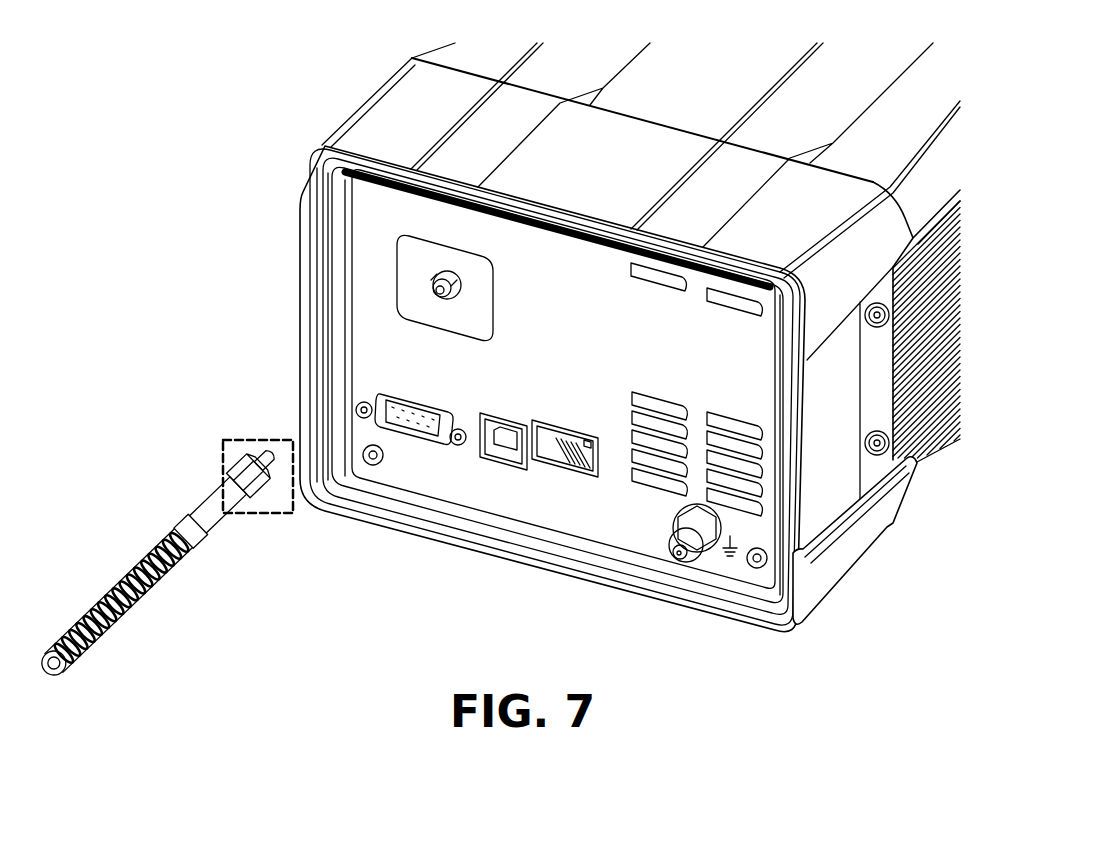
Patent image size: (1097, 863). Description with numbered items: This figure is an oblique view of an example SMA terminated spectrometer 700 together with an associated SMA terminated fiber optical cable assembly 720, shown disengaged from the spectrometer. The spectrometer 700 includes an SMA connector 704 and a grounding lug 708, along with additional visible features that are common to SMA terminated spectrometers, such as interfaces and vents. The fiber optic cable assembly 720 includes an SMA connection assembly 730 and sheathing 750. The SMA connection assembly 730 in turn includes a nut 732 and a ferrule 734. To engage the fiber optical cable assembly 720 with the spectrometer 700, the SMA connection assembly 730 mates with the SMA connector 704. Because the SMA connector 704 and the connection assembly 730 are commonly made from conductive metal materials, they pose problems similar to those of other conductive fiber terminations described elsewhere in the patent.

The SMA terminated spectrometer 700 is at (258, 86).
The SMA connector 704 is at (430, 290).
The grounding lug 708 is at (697, 543).
The SMA terminated fiber optical cable assembly 720 is at (209, 616).
The SMA connection assembly 730 is at (282, 546).
The nut 732 is at (240, 470).
The ferrule 734 is at (265, 449).
The sheathing 750 is at (87, 633).